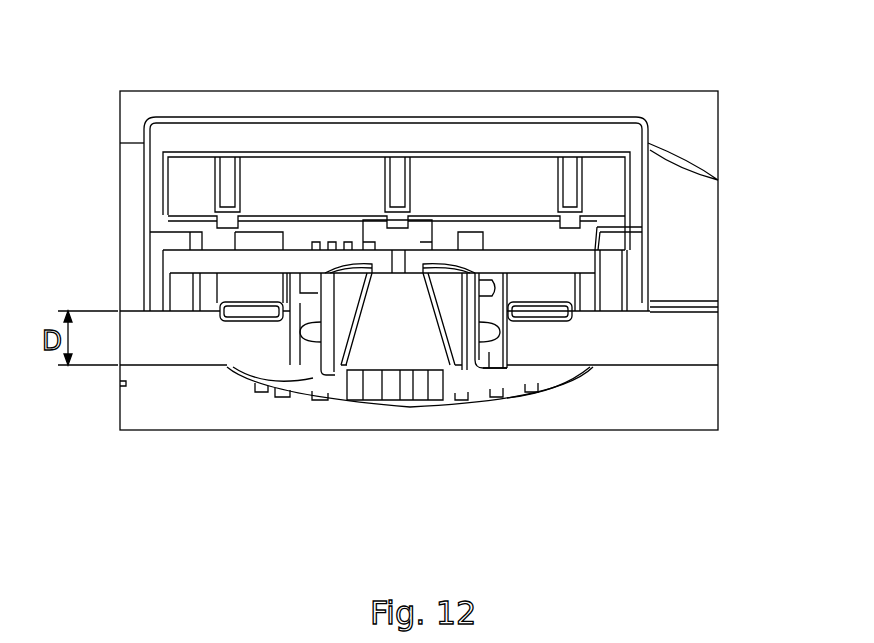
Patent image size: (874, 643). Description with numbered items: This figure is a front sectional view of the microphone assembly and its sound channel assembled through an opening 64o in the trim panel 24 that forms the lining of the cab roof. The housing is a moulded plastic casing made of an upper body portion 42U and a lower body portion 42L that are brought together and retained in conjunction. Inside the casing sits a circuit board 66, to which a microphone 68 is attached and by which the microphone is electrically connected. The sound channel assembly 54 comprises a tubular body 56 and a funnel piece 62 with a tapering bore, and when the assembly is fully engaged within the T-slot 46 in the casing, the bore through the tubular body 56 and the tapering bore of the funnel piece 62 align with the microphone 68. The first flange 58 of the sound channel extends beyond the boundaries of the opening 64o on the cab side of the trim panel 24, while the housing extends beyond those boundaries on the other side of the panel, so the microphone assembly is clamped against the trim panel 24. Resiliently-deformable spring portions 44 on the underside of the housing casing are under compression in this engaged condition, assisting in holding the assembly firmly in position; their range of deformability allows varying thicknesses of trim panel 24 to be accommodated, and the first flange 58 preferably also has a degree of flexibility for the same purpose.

The upper body portion 42U is at (185, 148).
The lower body portion 42L is at (612, 300).
The circuit board 66 is at (300, 262).
The microphone 68 is at (393, 205).
The trim panel 24 is at (680, 335).
The spring portions 44 is at (230, 322).
The first flange 58 is at (257, 385).
The sound channel assembly 54 is at (342, 445).
The funnel piece 62 is at (436, 295).
The tubular body 56 is at (463, 340).
The T-slot 46 is at (487, 352).
The opening 64o is at (492, 365).